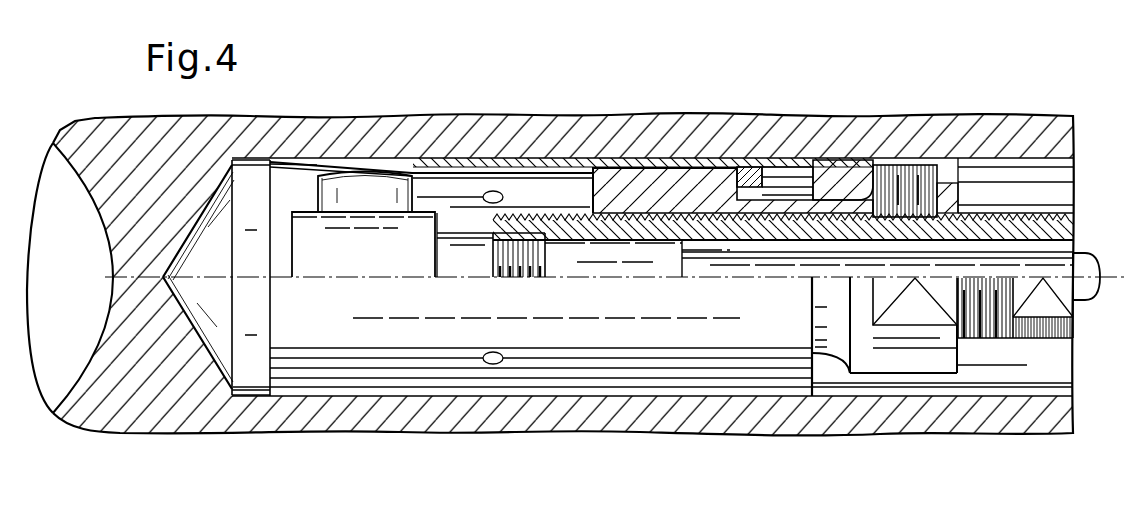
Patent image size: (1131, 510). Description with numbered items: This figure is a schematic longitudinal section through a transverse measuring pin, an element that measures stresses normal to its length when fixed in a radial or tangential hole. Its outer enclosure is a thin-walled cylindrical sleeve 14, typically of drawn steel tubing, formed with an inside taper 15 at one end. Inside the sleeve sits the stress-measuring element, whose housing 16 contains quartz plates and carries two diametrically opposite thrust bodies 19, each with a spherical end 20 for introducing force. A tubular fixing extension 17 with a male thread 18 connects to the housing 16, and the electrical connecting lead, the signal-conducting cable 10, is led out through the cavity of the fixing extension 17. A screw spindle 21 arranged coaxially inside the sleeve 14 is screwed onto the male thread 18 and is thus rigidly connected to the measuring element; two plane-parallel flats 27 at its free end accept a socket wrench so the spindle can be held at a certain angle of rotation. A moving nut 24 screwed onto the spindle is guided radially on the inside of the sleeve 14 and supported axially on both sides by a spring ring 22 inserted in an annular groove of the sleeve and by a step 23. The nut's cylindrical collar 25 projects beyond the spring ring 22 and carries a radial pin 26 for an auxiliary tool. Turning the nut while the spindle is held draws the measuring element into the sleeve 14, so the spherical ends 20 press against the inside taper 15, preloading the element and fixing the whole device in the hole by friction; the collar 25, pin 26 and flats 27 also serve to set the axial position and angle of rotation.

The signal-conducting cable 10 is at (1018, 253).
The cylindrical sleeve 14 is at (525, 167).
The inside taper 15 is at (415, 172).
The housing 16 is at (360, 225).
The tubular fixing extension 17 is at (453, 255).
The male thread 18 is at (978, 225).
The thrust bodies 19 is at (337, 187).
The spherical end 20 is at (353, 170).
The screw spindle 21 is at (666, 178).
The spring ring 22 is at (745, 172).
The step 23 is at (604, 180).
The ring 24 is at (853, 190).
The cylindrical collar 25 is at (905, 175).
The radial pin 26 is at (910, 310).
The plane-parallel flats 27 is at (1068, 320).